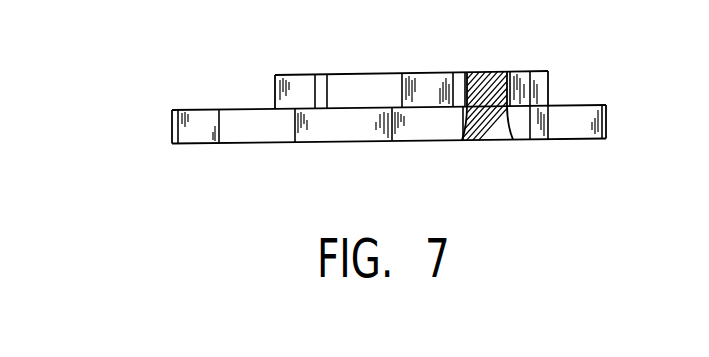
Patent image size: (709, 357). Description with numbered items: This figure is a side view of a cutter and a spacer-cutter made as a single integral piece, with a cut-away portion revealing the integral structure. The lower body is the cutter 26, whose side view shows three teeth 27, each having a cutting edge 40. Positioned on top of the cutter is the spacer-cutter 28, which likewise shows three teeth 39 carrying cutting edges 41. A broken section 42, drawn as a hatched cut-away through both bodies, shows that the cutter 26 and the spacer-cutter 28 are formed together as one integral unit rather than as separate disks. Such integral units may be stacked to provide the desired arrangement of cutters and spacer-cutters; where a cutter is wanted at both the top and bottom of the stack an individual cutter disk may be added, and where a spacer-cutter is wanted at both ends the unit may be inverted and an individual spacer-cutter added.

The cutter 26 is at (258, 130).
The teeth 27 is at (203, 133).
The spacer-cutter 28 is at (390, 90).
The teeth 39 is at (293, 90).
The cutting edges 40 is at (172, 130).
The cutting edges 41 is at (320, 87).
The broken section 42 is at (485, 72).